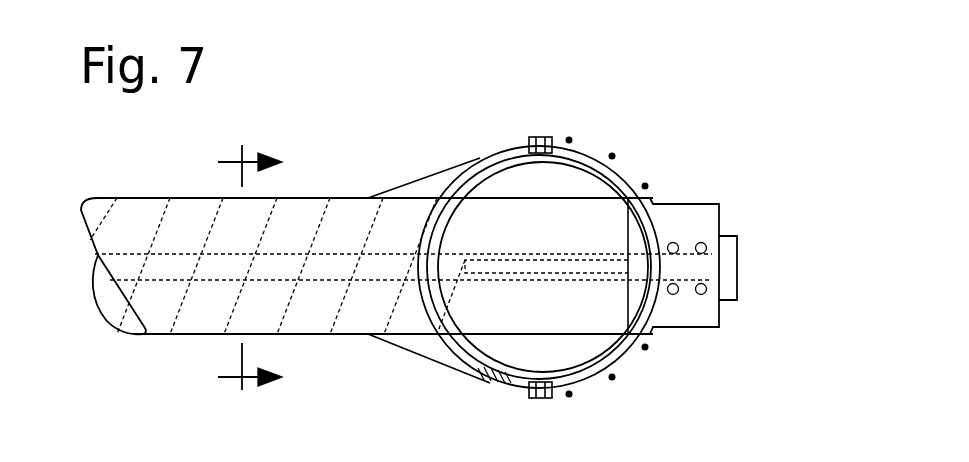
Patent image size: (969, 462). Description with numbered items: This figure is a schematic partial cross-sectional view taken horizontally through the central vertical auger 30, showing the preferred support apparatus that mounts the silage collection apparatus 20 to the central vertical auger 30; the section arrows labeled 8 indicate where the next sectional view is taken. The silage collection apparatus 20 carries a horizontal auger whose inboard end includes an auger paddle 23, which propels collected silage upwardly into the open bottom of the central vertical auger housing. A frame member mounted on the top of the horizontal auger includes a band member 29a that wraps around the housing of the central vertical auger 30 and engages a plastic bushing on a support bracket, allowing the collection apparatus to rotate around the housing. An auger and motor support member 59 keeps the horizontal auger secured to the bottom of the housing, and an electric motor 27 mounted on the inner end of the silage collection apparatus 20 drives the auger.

The section line 8- 8 is at (246, 271).
The silage collection apparatus 20 is at (198, 335).
The auger paddle 23 is at (563, 272).
The electric motor 27 is at (733, 257).
The band member 29a is at (418, 178).
The central vertical auger 30 is at (580, 167).
The auger and motor support member 59 is at (640, 175).